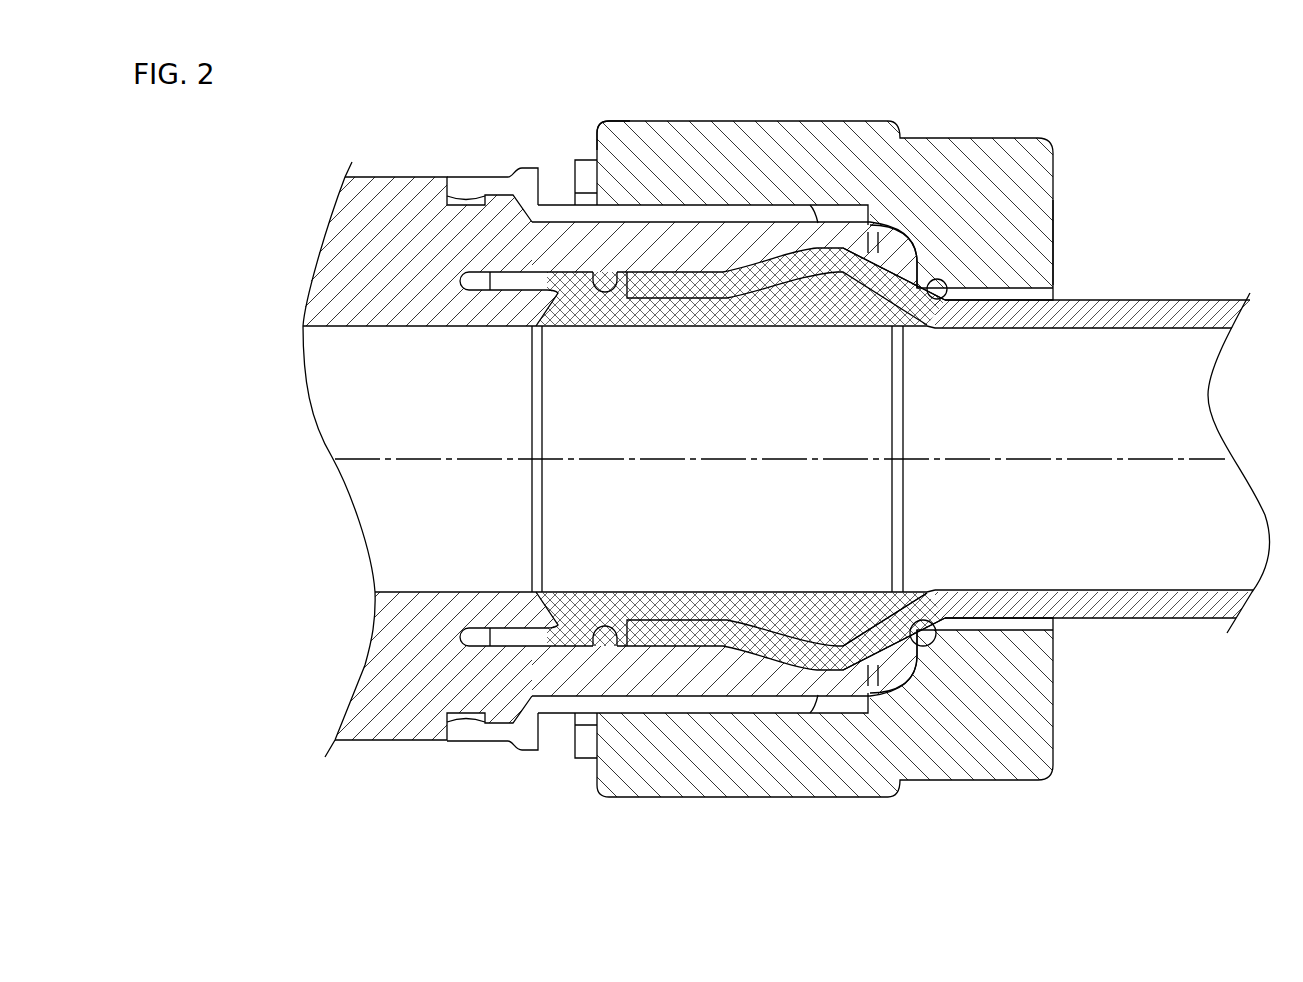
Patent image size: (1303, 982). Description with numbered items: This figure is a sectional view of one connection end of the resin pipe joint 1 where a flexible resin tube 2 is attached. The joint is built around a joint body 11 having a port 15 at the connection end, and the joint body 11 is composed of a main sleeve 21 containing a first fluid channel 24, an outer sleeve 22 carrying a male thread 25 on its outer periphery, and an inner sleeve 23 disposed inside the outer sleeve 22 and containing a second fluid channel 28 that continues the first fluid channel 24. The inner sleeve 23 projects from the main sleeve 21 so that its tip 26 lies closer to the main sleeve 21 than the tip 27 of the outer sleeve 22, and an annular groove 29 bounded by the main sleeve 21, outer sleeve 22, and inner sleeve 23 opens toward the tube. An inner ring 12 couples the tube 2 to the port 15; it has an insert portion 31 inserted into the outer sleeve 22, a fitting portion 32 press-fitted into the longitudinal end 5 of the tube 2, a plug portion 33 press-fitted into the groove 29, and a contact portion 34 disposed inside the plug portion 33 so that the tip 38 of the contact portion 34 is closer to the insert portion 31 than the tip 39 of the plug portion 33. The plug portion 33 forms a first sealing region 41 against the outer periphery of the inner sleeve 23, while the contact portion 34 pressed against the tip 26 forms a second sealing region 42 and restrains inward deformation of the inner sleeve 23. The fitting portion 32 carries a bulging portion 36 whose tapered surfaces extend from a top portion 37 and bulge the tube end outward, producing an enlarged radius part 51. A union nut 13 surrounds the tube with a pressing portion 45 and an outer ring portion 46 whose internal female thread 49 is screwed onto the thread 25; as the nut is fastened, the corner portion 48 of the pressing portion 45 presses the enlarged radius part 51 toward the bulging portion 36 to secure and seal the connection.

The resin pipe joint 1 is at (1082, 738).
The tube 2 is at (1170, 294).
The longitudinal end 5 is at (688, 620).
The joint body 11 is at (392, 742).
The inner ring 12 is at (912, 417).
The union nut 13 is at (1064, 170).
The port 15 is at (605, 284).
The main sleeve 21 is at (400, 177).
The outer sleeve 22 is at (556, 222).
The inner sleeve 23 is at (498, 292).
The first fluid channel 24 is at (358, 426).
The thread 25 is at (556, 700).
The tip of the inner sleeve 26 is at (563, 620).
The tip of the outer sleeve 27 is at (840, 672).
The second fluid channel 28 is at (530, 525).
The groove 29 is at (480, 272).
The insert portion 31 is at (608, 328).
The fitting portion 32 is at (725, 328).
The plug portion 33 is at (478, 292).
The contact portion 34 is at (545, 328).
The bulging portion 36 is at (905, 262).
The top portion 37 is at (817, 657).
The tip of the contact portion 38 is at (524, 603).
The tip of the plug portion 39 is at (480, 648).
The first sealing region 41 is at (501, 616).
The second sealing region 42 is at (558, 612).
The pressing portion 45 is at (1056, 262).
The outer ring portion 46 is at (597, 128).
The corner portion 48 is at (937, 300).
The thread 49 is at (857, 705).
The enlarged radius part 51 is at (920, 595).